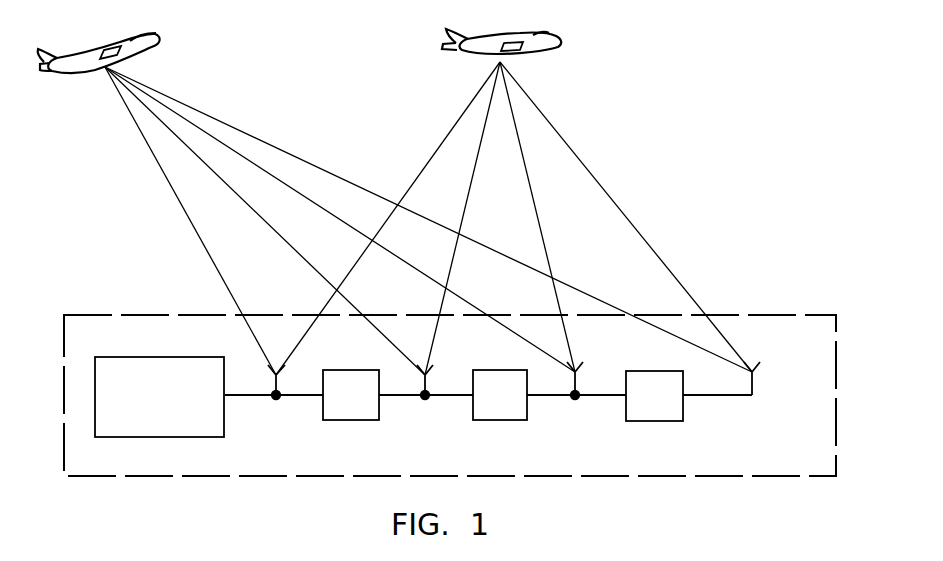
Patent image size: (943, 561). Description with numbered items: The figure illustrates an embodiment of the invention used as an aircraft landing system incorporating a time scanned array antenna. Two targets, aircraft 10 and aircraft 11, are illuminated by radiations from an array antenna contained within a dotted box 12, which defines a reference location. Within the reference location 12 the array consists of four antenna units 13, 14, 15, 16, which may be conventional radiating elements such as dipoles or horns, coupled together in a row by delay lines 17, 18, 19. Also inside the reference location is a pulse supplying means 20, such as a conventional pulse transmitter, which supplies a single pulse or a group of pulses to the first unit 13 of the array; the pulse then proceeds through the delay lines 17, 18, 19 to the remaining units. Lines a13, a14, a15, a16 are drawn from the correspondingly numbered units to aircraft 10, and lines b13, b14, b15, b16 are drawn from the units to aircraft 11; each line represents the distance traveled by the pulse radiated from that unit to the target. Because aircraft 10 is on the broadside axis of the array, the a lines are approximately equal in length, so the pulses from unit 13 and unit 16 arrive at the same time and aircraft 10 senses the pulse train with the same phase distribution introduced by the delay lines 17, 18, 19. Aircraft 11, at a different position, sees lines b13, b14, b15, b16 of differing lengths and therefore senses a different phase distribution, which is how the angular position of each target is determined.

The aircraft 10 is at (564, 36).
The aircraft 11 is at (156, 36).
The dotted box 12 is at (806, 315).
The antenna unit 13 is at (268, 371).
The antenna unit 14 is at (418, 369).
The antenna unit 15 is at (580, 377).
The antenna unit 16 is at (758, 377).
The delay line 17 is at (352, 420).
The delay line 18 is at (502, 420).
The delay line 19 is at (650, 421).
The pulse supplying means 20 is at (127, 357).
The line a13 is at (388, 218).
The line a14 is at (462, 218).
The line a15 is at (532, 217).
The line a16 is at (626, 217).
The line b13 is at (190, 221).
The line b14 is at (265, 221).
The line b15 is at (340, 219).
The line b16 is at (428, 219).